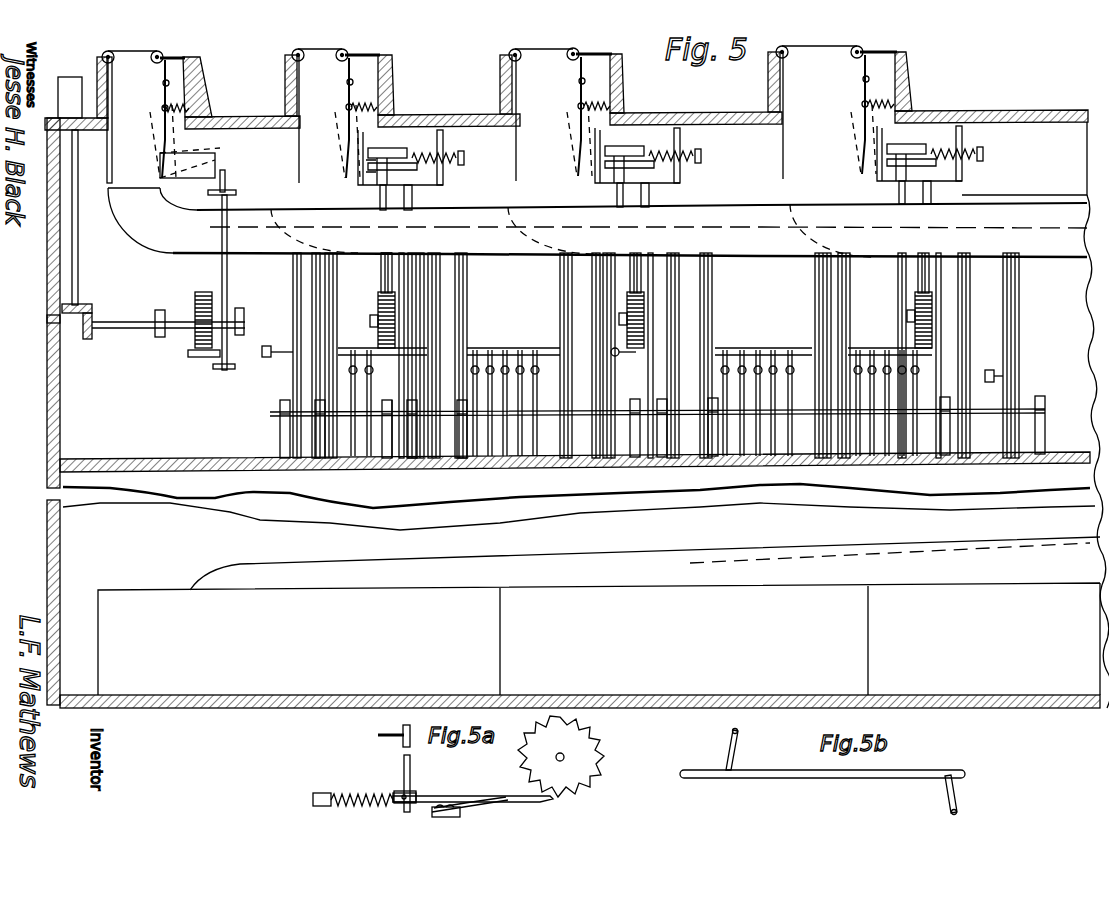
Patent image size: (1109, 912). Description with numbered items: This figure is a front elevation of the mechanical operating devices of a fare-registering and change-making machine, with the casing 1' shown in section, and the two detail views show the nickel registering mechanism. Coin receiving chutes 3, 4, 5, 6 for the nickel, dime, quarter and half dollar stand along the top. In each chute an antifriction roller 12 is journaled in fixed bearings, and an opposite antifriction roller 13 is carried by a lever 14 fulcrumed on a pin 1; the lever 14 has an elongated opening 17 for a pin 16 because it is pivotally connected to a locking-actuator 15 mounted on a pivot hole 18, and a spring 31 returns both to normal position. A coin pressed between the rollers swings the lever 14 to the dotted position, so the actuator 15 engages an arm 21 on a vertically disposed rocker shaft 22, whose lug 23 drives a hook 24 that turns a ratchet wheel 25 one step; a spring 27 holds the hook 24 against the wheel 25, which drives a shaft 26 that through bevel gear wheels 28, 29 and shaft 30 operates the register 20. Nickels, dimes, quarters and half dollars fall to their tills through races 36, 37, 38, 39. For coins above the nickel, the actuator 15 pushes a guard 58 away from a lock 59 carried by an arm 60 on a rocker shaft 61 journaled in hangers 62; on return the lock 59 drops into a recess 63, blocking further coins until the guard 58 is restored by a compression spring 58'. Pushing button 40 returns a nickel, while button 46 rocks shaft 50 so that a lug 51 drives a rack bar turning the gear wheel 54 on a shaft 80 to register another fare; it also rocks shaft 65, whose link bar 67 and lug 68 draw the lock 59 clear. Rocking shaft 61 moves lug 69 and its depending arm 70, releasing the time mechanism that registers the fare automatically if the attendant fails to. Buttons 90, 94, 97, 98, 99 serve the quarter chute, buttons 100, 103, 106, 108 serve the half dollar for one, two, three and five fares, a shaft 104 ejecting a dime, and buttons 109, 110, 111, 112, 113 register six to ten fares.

In FIG. 5, the pin 1 is at (493, 125).
In FIG. 5, the casing 1' is at (41, 411).
In FIG. 5, the coin receiving chute 3 is at (204, 75).
In FIG. 5, the coin receiving chute 4 is at (394, 70).
In FIG. 5, the coin receiving chute 5 is at (626, 84).
In FIG. 5, the coin receiving chute 6 is at (910, 70).
In FIG. 5, the antifriction roller 12 is at (112, 54).
In FIG. 5, the antifriction roller 13 is at (163, 55).
In FIG. 5, the lever 14 is at (160, 100).
In FIG. 5, the locking-actuator 15 is at (200, 150).
In FIG. 5, the pin 16 is at (170, 84).
In FIG. 5, the elongated opening 17 is at (200, 59).
In FIG. 5, the pivot hole 18 is at (163, 140).
In FIG. 5, the register 20 is at (70, 77).
In FIG. 5, the arm 21 is at (228, 176).
In FIG. 5A, the arm 21 is at (378, 743).
In FIG. 5B, the arm 21 is at (955, 797).
In FIG. 5, the rocker shaft 22 is at (229, 270).
In FIG. 5A, the rocker shaft 22 is at (412, 773).
In FIG. 5B, the rocker shaft 22 is at (817, 778).
In FIG. 5, the lug 23 is at (205, 358).
In FIG. 5A, the lug 23 is at (398, 804).
In FIG. 5B, the lug 23 is at (736, 748).
In FIG. 5, the hook 24 is at (205, 356).
In FIG. 5A, the hook 24 is at (470, 796).
In FIG. 5, the ratchet wheel 25 is at (200, 292).
In FIG. 5A, the ratchet wheel 25 is at (362, 794).
In FIG. 5, the shaft 26 is at (90, 339).
In FIG. 5A, the shaft 26 is at (565, 758).
In FIG. 5A, the spring 27 is at (505, 806).
In FIG. 5, the bevel gear wheel 28 is at (95, 309).
In FIG. 5, the bevel gear wheel 29 is at (48, 322).
In FIG. 5, the shaft 30 is at (80, 263).
In FIG. 5, the spring 31 is at (190, 107).
In FIG. 5, the chute or race 36 is at (122, 218).
In FIG. 5, the chute or race 37 is at (298, 198).
In FIG. 5, the chute or race 38 is at (508, 200).
In FIG. 5, the chute or race 39 is at (914, 220).
In FIG. 5, the button 40 is at (385, 346).
In FIG. 5, the button 46 is at (350, 384).
In FIG. 5, the rocker shaft 50 is at (283, 420).
In FIG. 5, the lug 51 is at (395, 400).
In FIG. 5, the gear wheel 54 is at (378, 312).
In FIG. 5, the guard 58 is at (715, 157).
In FIG. 5, the compression spring 58' is at (735, 160).
In FIG. 5, the lock 59 is at (362, 168).
In FIG. 5, the arm 60 is at (358, 185).
In FIG. 5, the rocker shaft 61 is at (440, 186).
In FIG. 5, the hangers 62 is at (358, 151).
In FIG. 5, the recess 63 is at (393, 150).
In FIG. 5, the rocker shaft 65 is at (268, 346).
In FIG. 5, the link bar 67 is at (346, 355).
In FIG. 5, the lug 68 is at (380, 195).
In FIG. 5, the lug 69 is at (413, 199).
In FIG. 5, the depending arm 70 is at (406, 263).
In FIG. 5, the shaft 80 is at (397, 318).
In FIG. 5, the push button 90 is at (477, 348).
In FIG. 5, the push button 94 is at (490, 348).
In FIG. 5, the push button 97 is at (505, 348).
In FIG. 5, the push button 98 is at (520, 348).
In FIG. 5, the push button 99 is at (535, 348).
In FIG. 5, the push button 100 is at (725, 348).
In FIG. 5, the push button 103 is at (742, 348).
In FIG. 5, the shaft 104 is at (773, 348).
In FIG. 5, the push button 106 is at (758, 348).
In FIG. 5, the push button 108 is at (790, 348).
In FIG. 5, the push button 109 is at (858, 348).
In FIG. 5, the push button 110 is at (872, 348).
In FIG. 5, the push button 111 is at (887, 348).
In FIG. 5, the push button 112 is at (905, 372).
In FIG. 5, the push button 113 is at (917, 375).